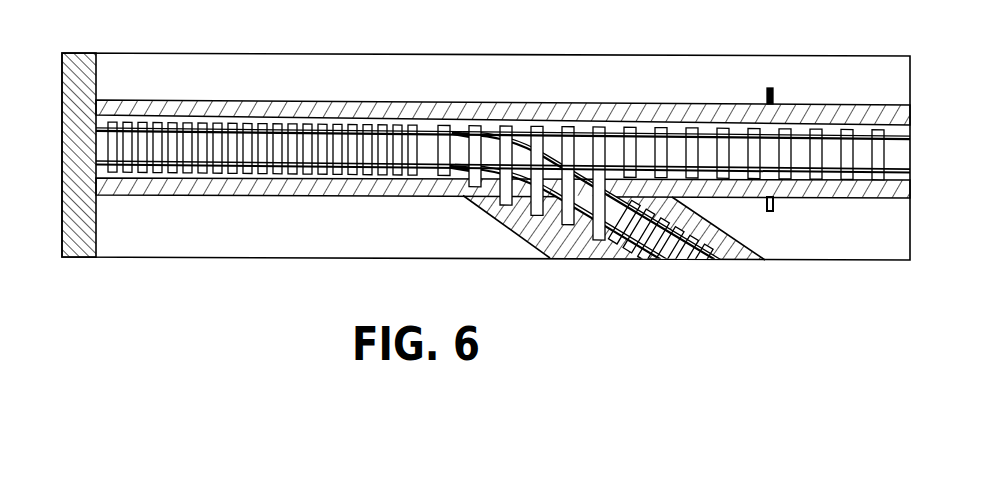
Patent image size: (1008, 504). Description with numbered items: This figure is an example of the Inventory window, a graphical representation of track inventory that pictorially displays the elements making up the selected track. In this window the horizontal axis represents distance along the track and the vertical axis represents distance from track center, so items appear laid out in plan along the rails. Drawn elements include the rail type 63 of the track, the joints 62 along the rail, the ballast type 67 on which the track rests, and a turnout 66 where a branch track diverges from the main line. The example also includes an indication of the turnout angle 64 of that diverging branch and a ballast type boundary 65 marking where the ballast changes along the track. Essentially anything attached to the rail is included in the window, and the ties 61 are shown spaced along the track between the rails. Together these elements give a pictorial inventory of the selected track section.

The sleepers (ties) 61 is at (262, 118).
The joints 62 is at (322, 115).
The rail type 63 is at (708, 137).
The turnout angle 64 is at (728, 220).
The ballast type boundary 65 is at (768, 203).
The turnouts 66 is at (514, 207).
The ballast type 67 is at (308, 180).